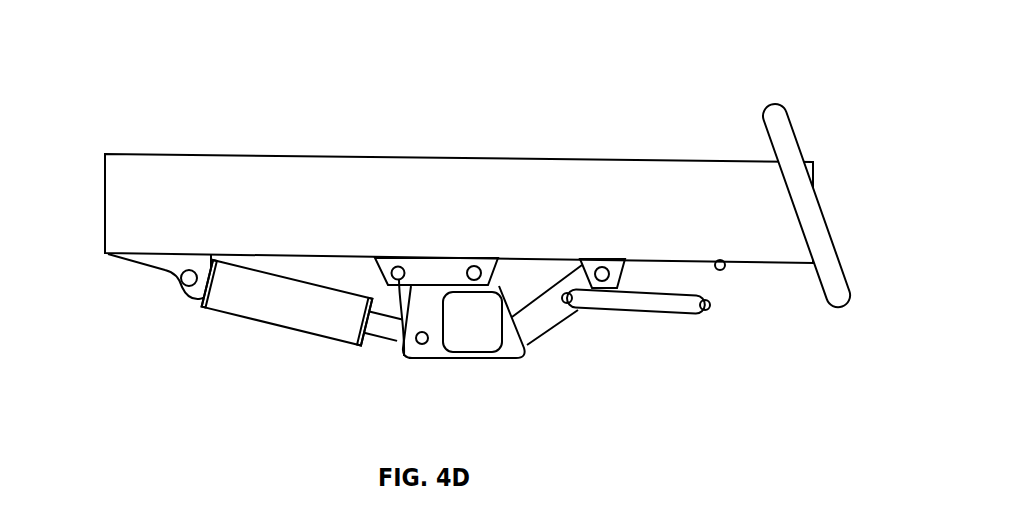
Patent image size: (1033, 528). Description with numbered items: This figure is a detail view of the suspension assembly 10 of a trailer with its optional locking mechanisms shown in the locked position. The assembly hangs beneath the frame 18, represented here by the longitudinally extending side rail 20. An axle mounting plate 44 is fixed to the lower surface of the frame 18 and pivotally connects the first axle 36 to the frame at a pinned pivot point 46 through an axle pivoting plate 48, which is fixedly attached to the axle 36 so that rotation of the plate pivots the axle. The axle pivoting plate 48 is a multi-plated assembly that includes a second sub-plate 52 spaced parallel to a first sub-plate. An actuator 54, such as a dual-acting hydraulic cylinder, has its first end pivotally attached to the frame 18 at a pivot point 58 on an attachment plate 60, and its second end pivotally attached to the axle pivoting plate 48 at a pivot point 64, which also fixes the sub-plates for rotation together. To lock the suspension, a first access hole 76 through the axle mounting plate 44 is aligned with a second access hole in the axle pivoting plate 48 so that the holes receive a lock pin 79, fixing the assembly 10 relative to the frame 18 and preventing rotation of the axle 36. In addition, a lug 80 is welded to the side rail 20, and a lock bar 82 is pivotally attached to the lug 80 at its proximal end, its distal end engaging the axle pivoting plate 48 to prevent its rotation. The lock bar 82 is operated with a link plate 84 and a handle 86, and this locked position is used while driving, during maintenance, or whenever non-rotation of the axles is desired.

The suspension assembly 10 is at (618, 38).
The frame 18 is at (105, 176).
The side rail 20 is at (710, 158).
The first axle 36 is at (478, 325).
The axle mounting plate 44 is at (445, 260).
The pivot point 46 is at (474, 262).
The axle pivoting plate 48 is at (472, 360).
The second sub-plate 52 is at (512, 350).
The actuator 54 is at (282, 317).
The pivot point 58 is at (185, 287).
The attachment plate 60 is at (147, 259).
The pivot point 64 is at (420, 344).
The first access hole 76 is at (400, 315).
The lock pin 79 is at (383, 262).
The lug 80 is at (620, 258).
The lock bar 82 is at (577, 310).
The link plate 84 is at (672, 318).
The handle 86 is at (727, 282).